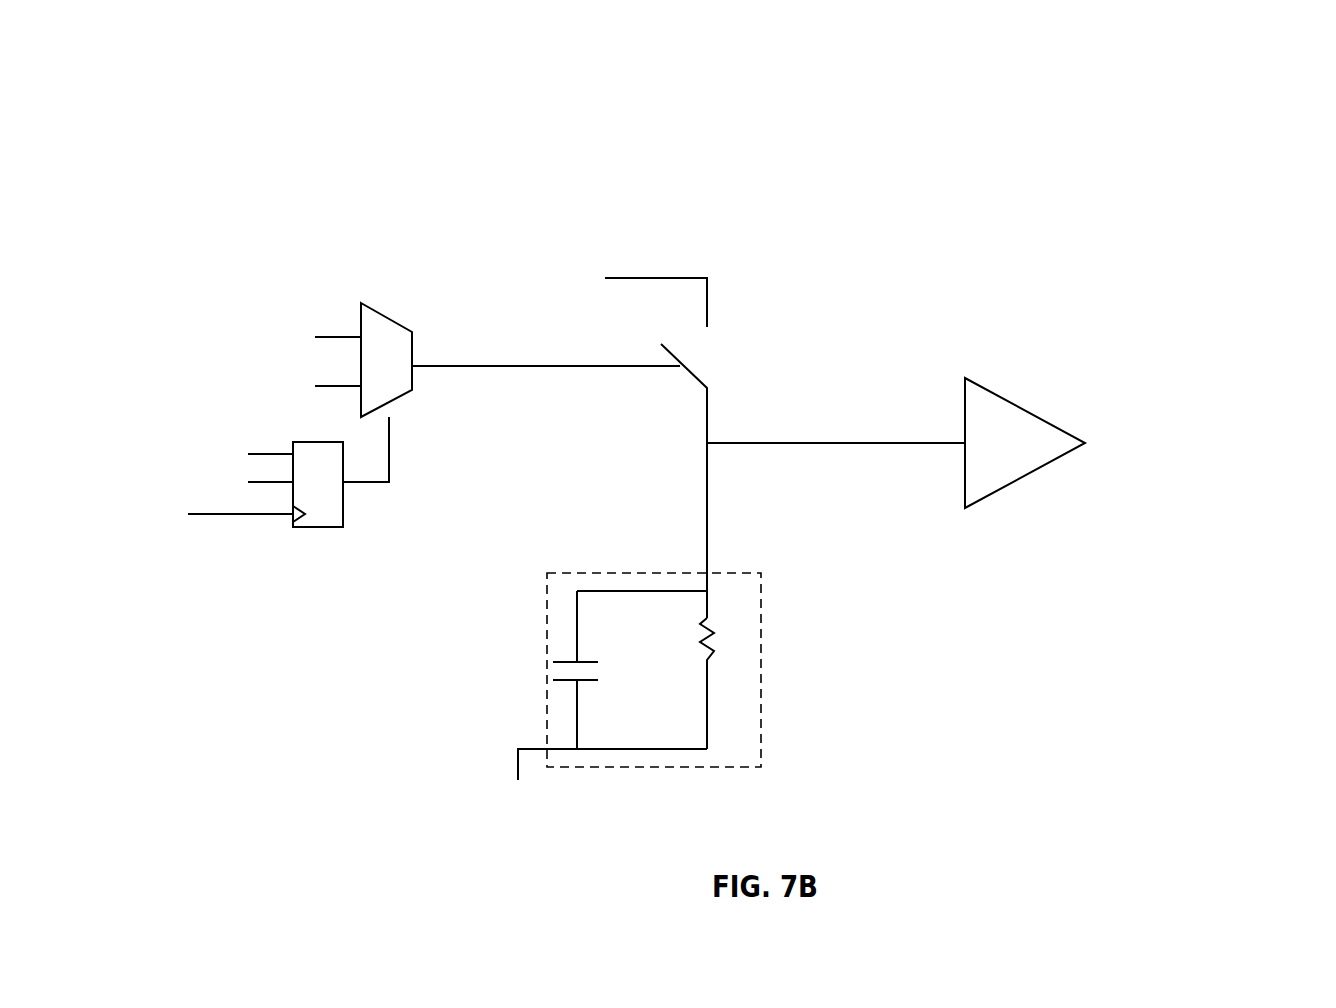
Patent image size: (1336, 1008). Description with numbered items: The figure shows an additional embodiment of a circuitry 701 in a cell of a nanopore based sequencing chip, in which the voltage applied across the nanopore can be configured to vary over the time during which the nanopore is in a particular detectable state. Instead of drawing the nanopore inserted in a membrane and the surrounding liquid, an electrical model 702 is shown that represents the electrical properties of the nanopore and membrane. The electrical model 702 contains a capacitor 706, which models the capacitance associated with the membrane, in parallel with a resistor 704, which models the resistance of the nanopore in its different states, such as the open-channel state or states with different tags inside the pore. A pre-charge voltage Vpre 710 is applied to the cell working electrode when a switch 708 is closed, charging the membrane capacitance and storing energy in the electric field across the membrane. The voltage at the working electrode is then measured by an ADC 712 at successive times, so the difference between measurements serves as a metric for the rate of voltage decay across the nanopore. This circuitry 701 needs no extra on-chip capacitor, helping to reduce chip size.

The circuitry 701 is at (418, 79).
The electrical model 702 is at (743, 572).
The resistor 704 is at (708, 620).
The capacitor 706 is at (588, 681).
The switch S1 708 is at (845, 366).
The voltage Vpre 710 is at (583, 326).
The ADC 712 is at (1172, 492).